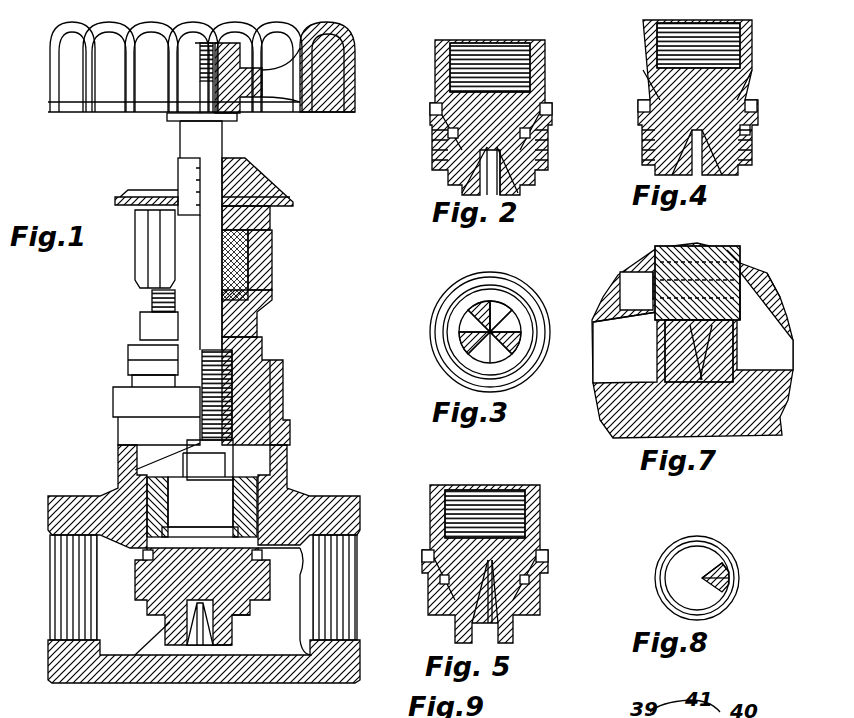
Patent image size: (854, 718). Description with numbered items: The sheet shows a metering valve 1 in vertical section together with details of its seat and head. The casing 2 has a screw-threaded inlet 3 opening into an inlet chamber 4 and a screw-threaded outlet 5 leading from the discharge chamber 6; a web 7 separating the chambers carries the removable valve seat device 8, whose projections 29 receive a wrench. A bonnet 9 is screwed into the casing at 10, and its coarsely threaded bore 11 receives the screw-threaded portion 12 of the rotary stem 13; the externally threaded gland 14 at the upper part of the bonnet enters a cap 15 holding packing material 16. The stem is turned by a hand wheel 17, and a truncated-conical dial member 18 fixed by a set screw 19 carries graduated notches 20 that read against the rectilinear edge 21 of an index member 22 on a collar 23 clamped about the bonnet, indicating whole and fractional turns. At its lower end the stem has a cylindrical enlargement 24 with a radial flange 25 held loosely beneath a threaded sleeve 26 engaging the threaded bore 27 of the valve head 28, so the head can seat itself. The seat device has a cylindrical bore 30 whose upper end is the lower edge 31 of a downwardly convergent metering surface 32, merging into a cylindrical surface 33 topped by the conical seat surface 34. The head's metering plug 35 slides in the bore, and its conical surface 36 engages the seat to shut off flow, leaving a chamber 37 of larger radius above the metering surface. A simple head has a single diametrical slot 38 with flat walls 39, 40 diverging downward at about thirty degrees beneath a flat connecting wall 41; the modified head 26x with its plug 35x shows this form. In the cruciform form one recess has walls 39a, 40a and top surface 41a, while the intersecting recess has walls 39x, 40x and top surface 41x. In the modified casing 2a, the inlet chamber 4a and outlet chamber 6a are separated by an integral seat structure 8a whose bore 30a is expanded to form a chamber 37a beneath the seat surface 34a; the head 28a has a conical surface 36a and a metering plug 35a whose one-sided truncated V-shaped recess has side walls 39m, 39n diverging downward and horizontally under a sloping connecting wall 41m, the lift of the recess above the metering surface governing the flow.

In FIG. 1, the valve 1 is at (289, 358).
In FIG. 1, the casing 2 is at (287, 508).
In FIG. 1, the internal screw-threaded inlet 3 is at (345, 580).
In FIG. 1, the inlet chamber 4 is at (285, 648).
In FIG. 1, the internally screw-threaded outlet 5 is at (60, 605).
In FIG. 1, the discharge chamber 6 is at (125, 530).
In FIG. 1, the web 7 is at (288, 590).
In FIG. 1, the valve seat device 8 is at (232, 628).
In FIG. 2, the valve seat device 8 is at (546, 142).
In FIG. 1, the bonnet 9 is at (288, 386).
In FIG. 1, the screw-threaded engagement 10 is at (265, 425).
In FIG. 1, the coarse thread 11 is at (255, 332).
In FIG. 1, the screw-threaded portion 12 is at (190, 382).
In FIG. 1, the rotary valve stem 13 is at (218, 135).
In FIG. 1, the bonnet shoulder 14 is at (253, 302).
In FIG. 1, the cap 15 is at (265, 264).
In FIG. 1, the packing material 16 is at (246, 240).
In FIG. 1, the hand wheel 17 is at (336, 44).
In FIG. 1, the dial member 18 is at (178, 164).
In FIG. 1, the set screw 19 is at (240, 170).
In FIG. 1, the graduated notches 20 is at (160, 195).
In FIG. 1, the rectilinear edge 21 is at (214, 220).
In FIG. 1, the index member 22 is at (185, 252).
In FIG. 1, the collar 23 is at (128, 352).
In FIG. 1, the cylindrical enlargement 24 is at (212, 488).
In FIG. 1, the radial flange 25 is at (262, 500).
In FIG. 1, the externally screw-threaded sleeve 26 is at (240, 515).
In FIG. 2, the internally screw-threaded bore 27 is at (456, 50).
In FIG. 1, the valve head 28 is at (120, 495).
In FIG. 2, the valve head 28 is at (437, 70).
In FIG. 2, the projections 29 is at (546, 106).
In FIG. 2, the cylindrical bore 30 is at (512, 176).
In FIG. 4, the lower edge 31 is at (656, 158).
In FIG. 4, the metering surface 32 is at (746, 140).
In FIG. 4, the cylindrical surface 33 is at (750, 118).
In FIG. 4, the conical seat surface 34 is at (738, 108).
In FIG. 2, the metering plug portion 35 is at (478, 142).
In FIG. 4, the conical surface 36 is at (650, 106).
In FIG. 2, the chamber 37 is at (440, 138).
In FIG. 5, the recess or slot 38 is at (510, 630).
In FIG. 5, the flat wall 39 is at (455, 636).
In FIG. 5, the flat wall 40 is at (490, 617).
In FIG. 5, the connecting wall 41 is at (447, 540).
In FIG. 2, the side wall 39a is at (497, 190).
In FIG. 3, the side wall 39a is at (498, 305).
In FIG. 2, the side wall 40a is at (480, 185).
In FIG. 3, the side wall 40a is at (515, 330).
In FIG. 3, the flat surface 41a is at (505, 325).
In FIG. 3, the side wall 39x is at (467, 320).
In FIG. 3, the side wall 40x is at (482, 308).
In FIG. 3, the flat surface 41x is at (520, 336).
In FIG. 3, the chamber 37a is at (512, 352).
In FIG. 7, the valve casing 2a is at (618, 300).
In FIG. 7, the inlet chamber 4a is at (596, 402).
In FIG. 7, the outlet chamber 6a is at (742, 288).
In FIG. 7, the seat structure 8a is at (762, 300).
In FIG. 7, the valve head 28a is at (690, 252).
In FIG. 7, the cylindrical bore 30a is at (735, 377).
In FIG. 7, the conical seat surface 34a is at (652, 270).
In FIG. 7, the metering plug portion 35a is at (720, 323).
In FIG. 8, the metering plug portion 35a is at (680, 556).
In FIG. 7, the conical surface 36a is at (748, 292).
In FIG. 7, the side wall 39m is at (730, 360).
In FIG. 8, the side wall 39m is at (728, 590).
In FIG. 7, the connecting wall 41m is at (725, 342).
In FIG. 8, the connecting wall 41m is at (722, 575).
In FIG. 8, the side wall 39n is at (712, 565).
In FIG. 5, the valve head 26x is at (445, 500).
In FIG. 5, the metering plug 35x is at (526, 555).